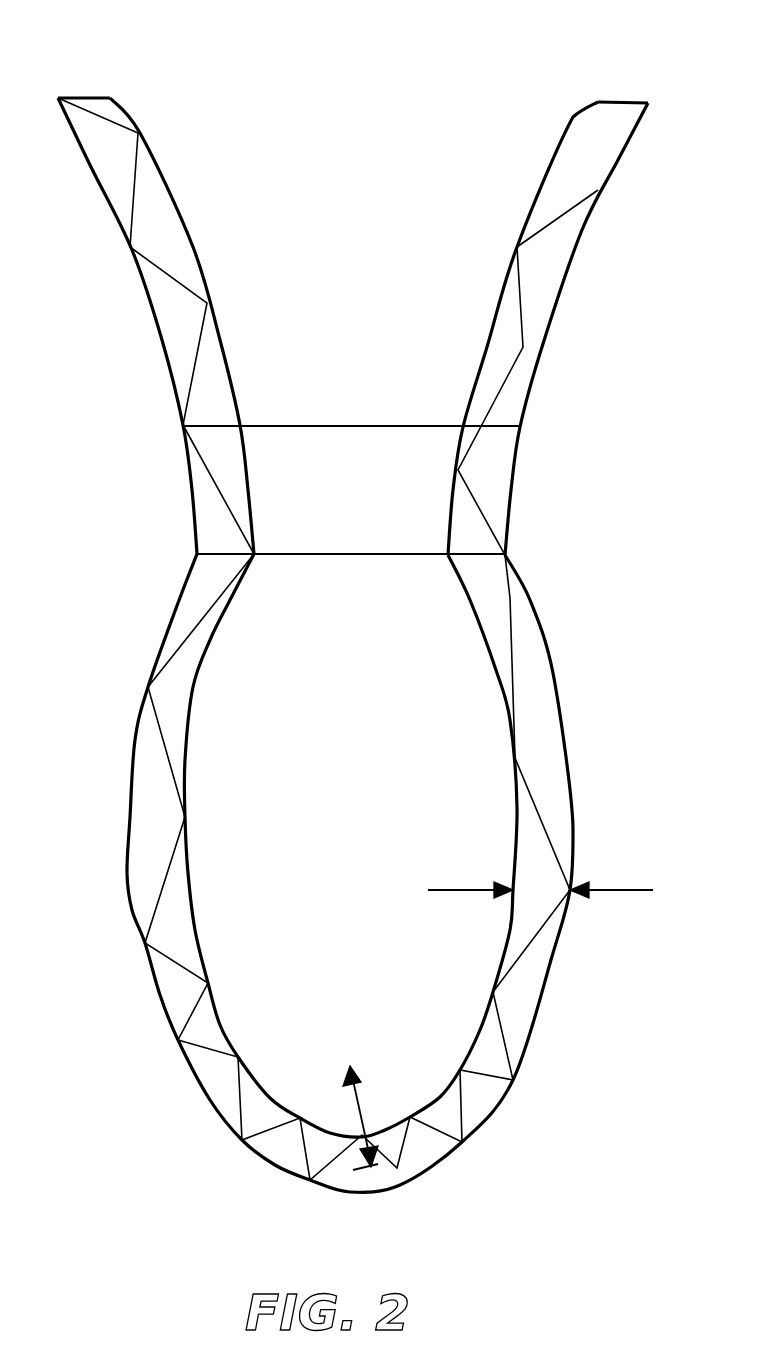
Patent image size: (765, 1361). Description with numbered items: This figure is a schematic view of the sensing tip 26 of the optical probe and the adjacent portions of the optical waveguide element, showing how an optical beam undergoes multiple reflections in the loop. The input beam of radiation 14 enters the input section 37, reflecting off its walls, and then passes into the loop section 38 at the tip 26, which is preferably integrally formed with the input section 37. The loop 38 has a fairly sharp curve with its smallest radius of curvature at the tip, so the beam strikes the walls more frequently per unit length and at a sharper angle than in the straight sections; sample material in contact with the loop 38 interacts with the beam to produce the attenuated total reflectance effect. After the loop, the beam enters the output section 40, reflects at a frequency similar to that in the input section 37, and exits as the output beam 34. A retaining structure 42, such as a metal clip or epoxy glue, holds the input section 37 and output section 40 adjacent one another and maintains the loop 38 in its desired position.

The input beam of radiation 14 is at (598, 190).
The output beam 34 is at (75, 100).
The output section 40 is at (178, 347).
The input section 37 is at (557, 302).
The retaining structure 42 is at (389, 427).
The tip 26 is at (523, 1080).
The loop section 38 is at (462, 1142).